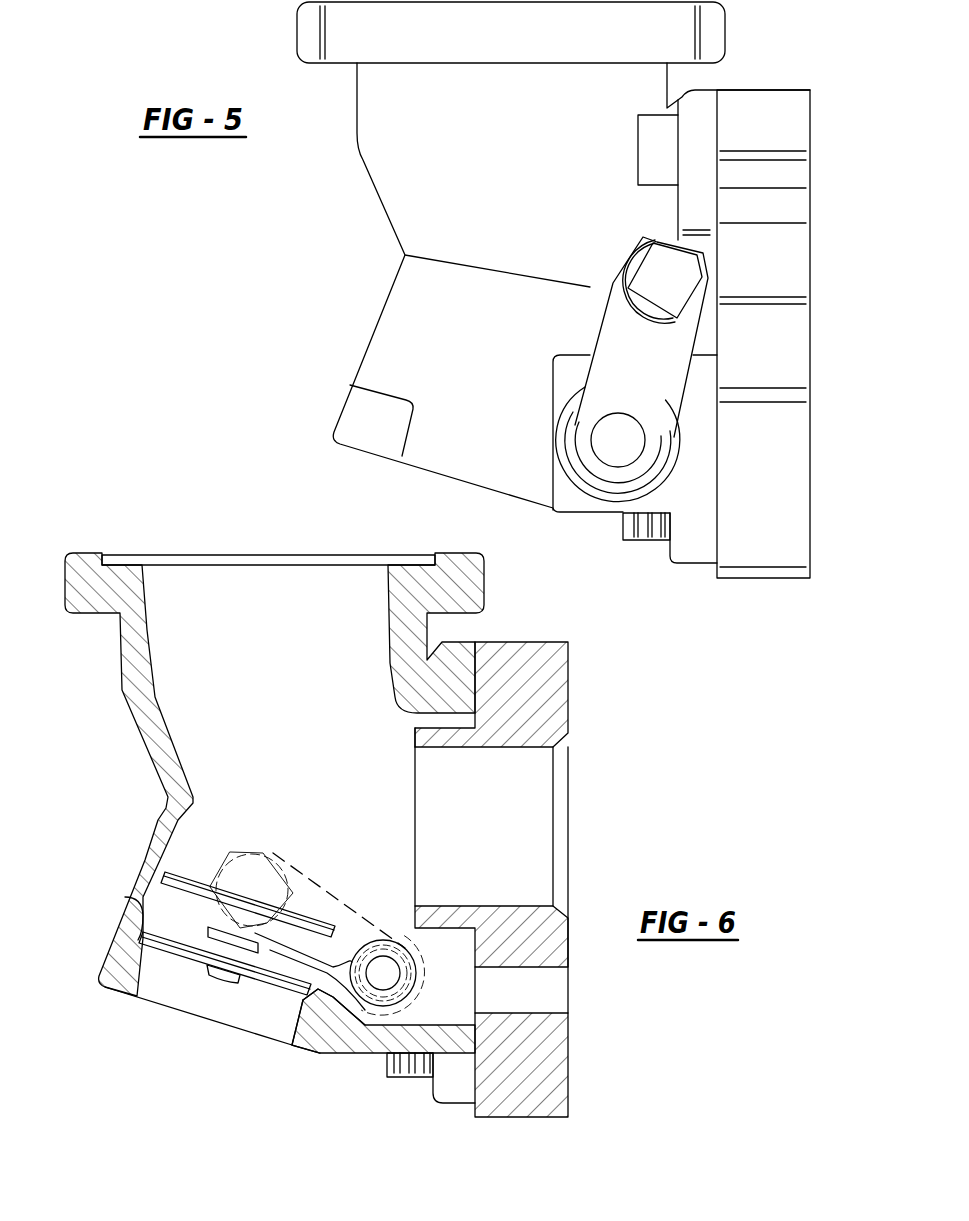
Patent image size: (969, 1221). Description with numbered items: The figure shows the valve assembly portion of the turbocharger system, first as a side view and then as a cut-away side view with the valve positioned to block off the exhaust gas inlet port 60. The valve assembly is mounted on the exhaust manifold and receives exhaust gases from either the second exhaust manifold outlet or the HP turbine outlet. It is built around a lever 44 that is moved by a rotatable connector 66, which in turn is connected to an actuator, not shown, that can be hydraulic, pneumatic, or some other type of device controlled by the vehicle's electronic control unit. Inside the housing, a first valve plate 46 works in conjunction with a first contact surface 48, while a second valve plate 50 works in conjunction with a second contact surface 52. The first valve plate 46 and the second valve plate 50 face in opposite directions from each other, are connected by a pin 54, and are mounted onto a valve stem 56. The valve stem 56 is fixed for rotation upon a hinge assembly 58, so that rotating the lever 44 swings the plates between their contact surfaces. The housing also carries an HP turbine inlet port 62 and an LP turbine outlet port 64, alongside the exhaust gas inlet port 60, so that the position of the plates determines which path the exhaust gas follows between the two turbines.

In FIG. 5, the lever 44 is at (653, 357).
In FIG. 6, the lever 44 is at (362, 920).
In FIG. 6, the first valve plate 46 is at (167, 870).
In FIG. 6, the first contact surface 48 is at (414, 741).
In FIG. 6, the second valve plate 50 is at (168, 947).
In FIG. 6, the second contact surface 52 is at (125, 897).
In FIG. 6, the pin 54 is at (220, 980).
In FIG. 6, the valve stem 56 is at (327, 973).
In FIG. 5, the hinge assembly 58 is at (620, 440).
In FIG. 6, the hinge assembly 58 is at (383, 977).
In FIG. 5, the exhaust gas inlet port 60 is at (447, 487).
In FIG. 6, the exhaust gas inlet port 60 is at (263, 1013).
In FIG. 5, the HP turbine inlet port 62 is at (813, 331).
In FIG. 6, the HP turbine inlet port 62 is at (555, 762).
In FIG. 6, the LP turbine outlet port 64 is at (223, 562).
In FIG. 5, the rotatable connector 66 is at (660, 277).
In FIG. 6, the rotatable connector 66 is at (258, 878).